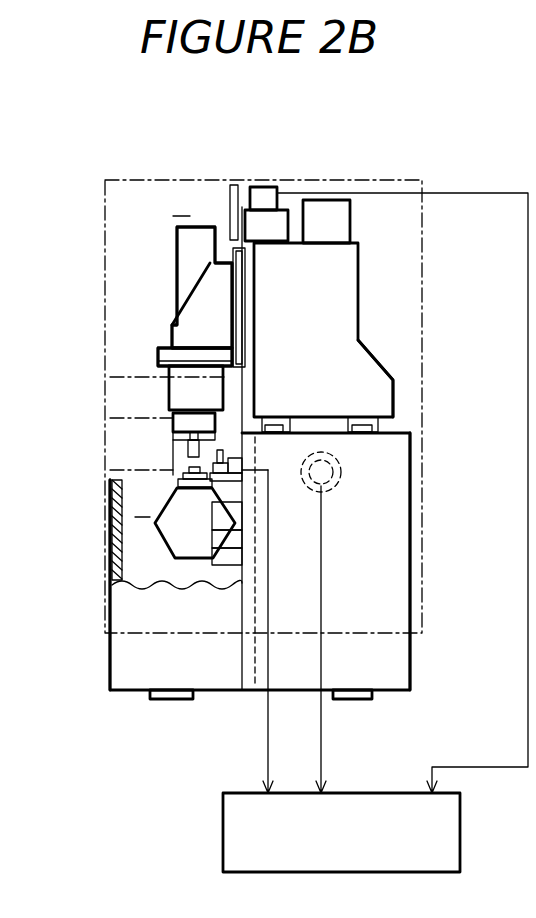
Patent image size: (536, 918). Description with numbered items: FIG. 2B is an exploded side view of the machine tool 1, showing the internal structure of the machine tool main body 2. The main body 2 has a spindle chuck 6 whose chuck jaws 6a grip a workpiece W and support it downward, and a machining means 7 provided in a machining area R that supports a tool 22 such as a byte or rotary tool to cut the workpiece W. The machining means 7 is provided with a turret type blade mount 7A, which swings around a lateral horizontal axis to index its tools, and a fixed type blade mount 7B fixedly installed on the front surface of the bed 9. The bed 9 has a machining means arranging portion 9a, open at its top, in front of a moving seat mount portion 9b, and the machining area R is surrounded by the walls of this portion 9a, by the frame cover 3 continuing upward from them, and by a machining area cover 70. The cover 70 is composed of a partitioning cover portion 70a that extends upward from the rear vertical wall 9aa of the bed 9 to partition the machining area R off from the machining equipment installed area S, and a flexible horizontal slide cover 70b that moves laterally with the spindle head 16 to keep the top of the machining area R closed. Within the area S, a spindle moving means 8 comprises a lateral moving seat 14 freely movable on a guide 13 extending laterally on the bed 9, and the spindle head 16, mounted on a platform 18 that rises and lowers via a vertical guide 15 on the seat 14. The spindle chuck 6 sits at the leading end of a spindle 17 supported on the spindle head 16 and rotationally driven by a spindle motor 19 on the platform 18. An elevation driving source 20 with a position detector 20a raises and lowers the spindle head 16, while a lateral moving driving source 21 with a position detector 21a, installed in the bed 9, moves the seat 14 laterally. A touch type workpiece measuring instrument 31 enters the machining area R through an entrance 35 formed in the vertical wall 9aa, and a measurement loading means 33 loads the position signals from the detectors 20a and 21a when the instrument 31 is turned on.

The robot hand 1 is at (341, 172).
The machine tool main body 2 is at (415, 660).
The frame cover 3 is at (366, 180).
The spindle chuck 6 is at (180, 425).
The chuck jaws 6a is at (187, 447).
The machining means 7 is at (210, 766).
The turret type blade mount 7A is at (173, 530).
The fixed type blade mount 7B is at (223, 563).
The spindle moving means 8 is at (363, 333).
The bed 9 is at (395, 603).
The machining means arranging portion 9a is at (117, 558).
The rear vertical wall 9aa is at (255, 683).
The moving seat mount portion 9b is at (368, 613).
The guide 13 is at (365, 417).
The lateral moving seat 14 is at (343, 290).
The guide 15 is at (240, 250).
The spindle head 16 is at (183, 382).
The spindle 17 is at (187, 405).
The platform 18 is at (195, 325).
The spindle motor 19 is at (322, 205).
The elevation driving source 20 is at (241, 212).
The position detector 20a is at (266, 185).
The lateral moving driving source 21 is at (341, 481).
The position detector 21a is at (340, 491).
The tool 22 is at (118, 501).
The workpiece measuring instrument 31 is at (223, 463).
The measurement loading means 33 is at (460, 820).
The entrance 35 is at (247, 483).
The machining area cover 70 is at (162, 104).
The partitioning cover portion 70a is at (242, 216).
The slide cover 70b is at (212, 385).
The workpiece W is at (187, 470).
The machining equipment installed area S is at (181, 204).
The machining area R is at (143, 505).